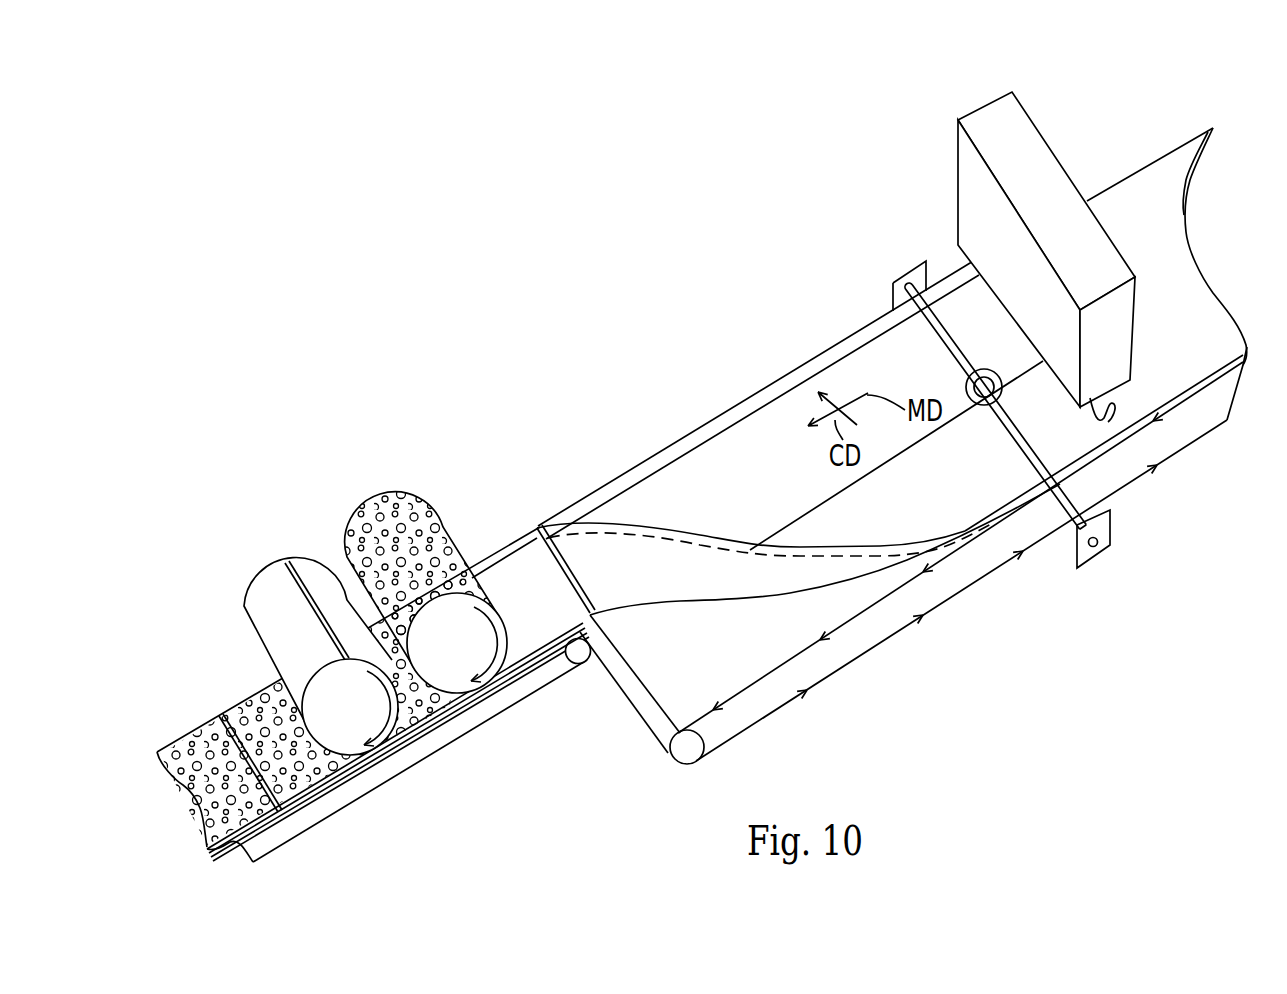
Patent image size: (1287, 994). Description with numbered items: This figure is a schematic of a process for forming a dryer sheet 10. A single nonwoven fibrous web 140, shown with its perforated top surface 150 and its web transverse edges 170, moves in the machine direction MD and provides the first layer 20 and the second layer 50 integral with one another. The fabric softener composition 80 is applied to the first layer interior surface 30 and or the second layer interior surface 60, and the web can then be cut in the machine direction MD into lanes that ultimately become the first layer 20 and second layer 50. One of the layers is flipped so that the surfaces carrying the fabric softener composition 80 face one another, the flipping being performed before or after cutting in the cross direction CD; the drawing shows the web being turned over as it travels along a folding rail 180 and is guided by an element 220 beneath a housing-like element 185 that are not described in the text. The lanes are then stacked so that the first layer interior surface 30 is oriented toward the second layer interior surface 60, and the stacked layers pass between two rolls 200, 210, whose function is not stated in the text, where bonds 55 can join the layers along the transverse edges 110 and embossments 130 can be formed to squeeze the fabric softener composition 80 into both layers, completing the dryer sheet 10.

The dryer sheet 10 is at (337, 767).
The first layer 20 is at (697, 483).
The first layer interior surface 30 is at (767, 453).
The second layer 50 is at (517, 577).
The bonds 55 is at (338, 765).
The second layer interior surface 60 is at (975, 485).
The fabric softener composition 80 is at (870, 377).
The transverse edges 110 is at (340, 580).
The embossments 130 is at (305, 800).
The nonwoven fibrous web 140 is at (1128, 210).
The top surface 150 is at (1167, 203).
The web transverse edges 170 is at (790, 377).
The folding rail 180 is at (643, 573).
The housing 185 is at (1006, 130).
The perforated roller 200 is at (408, 502).
The roller 210 is at (277, 564).
The rod 220 is at (985, 350).